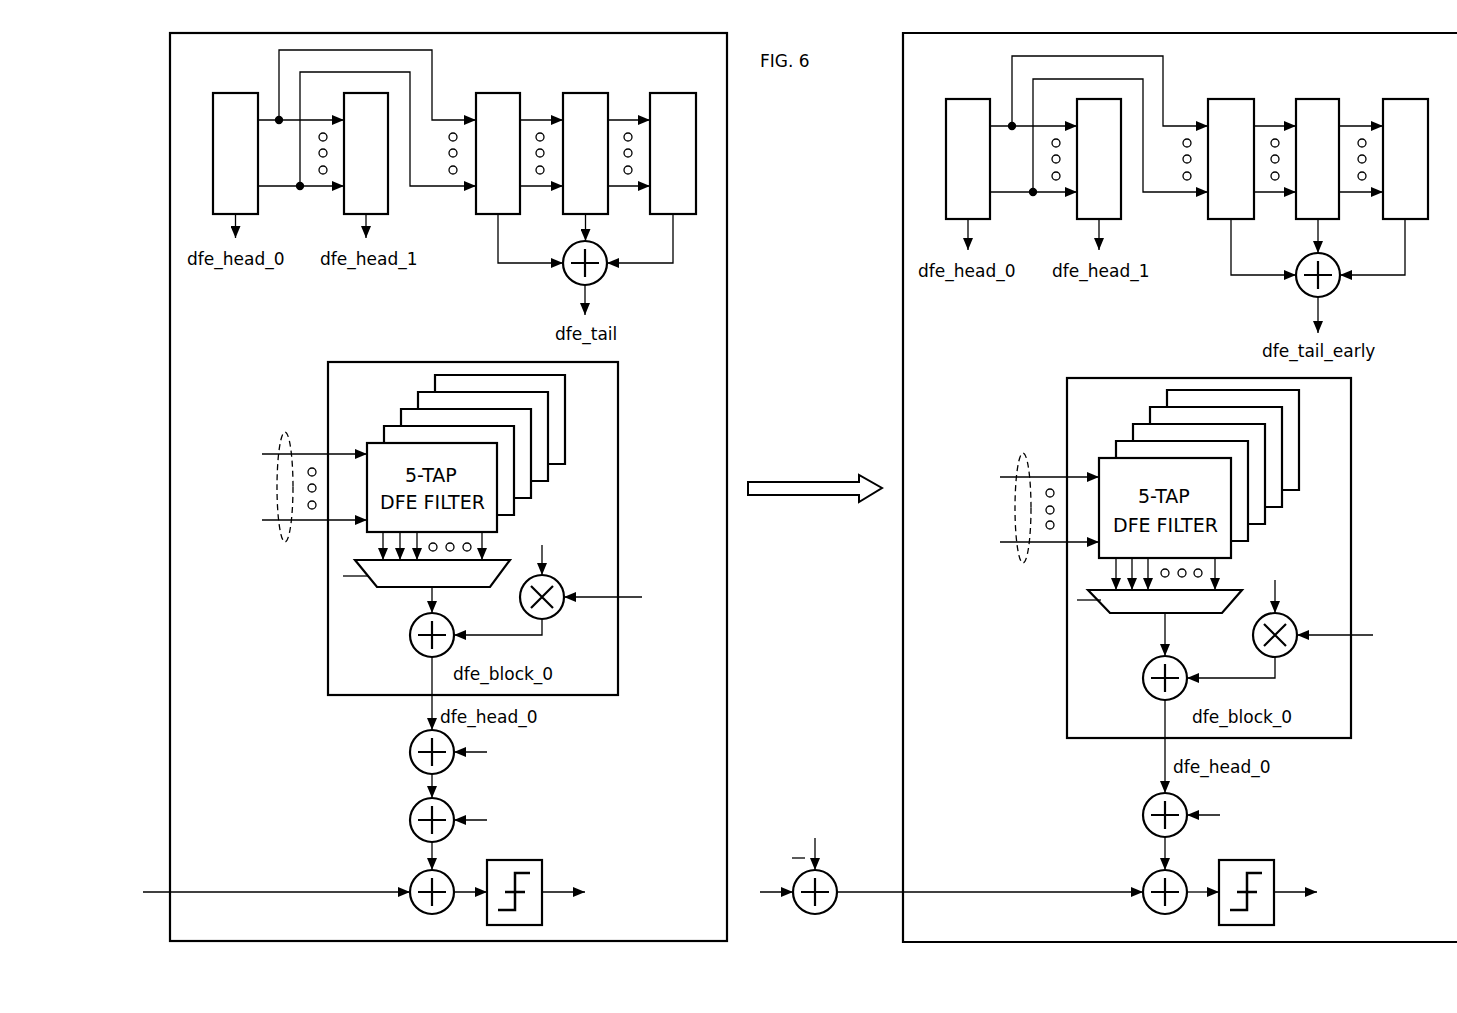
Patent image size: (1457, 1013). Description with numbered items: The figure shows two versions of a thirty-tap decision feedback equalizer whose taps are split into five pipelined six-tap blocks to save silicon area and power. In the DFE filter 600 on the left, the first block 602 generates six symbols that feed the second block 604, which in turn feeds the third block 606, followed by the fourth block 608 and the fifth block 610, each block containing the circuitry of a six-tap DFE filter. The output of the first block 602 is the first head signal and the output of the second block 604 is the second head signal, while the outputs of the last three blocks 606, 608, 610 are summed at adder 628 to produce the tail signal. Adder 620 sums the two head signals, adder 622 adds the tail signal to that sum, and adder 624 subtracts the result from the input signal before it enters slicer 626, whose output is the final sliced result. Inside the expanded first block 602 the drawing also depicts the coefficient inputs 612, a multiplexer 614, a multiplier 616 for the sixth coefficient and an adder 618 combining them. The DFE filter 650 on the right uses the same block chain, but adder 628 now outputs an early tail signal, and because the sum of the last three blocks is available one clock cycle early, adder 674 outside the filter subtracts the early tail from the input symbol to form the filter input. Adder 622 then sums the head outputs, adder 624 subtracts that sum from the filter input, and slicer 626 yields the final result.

The 30-tap DFE filter 600 is at (168, 168).
The DFE filter 650 is at (901, 168).
The dfe_block_0 602 is at (258, 199).
The dfe_block_1 604 is at (388, 199).
The dfe_block_2 606 is at (508, 93).
The dfe_block_3 608 is at (595, 93).
The dfe_block_4 610 is at (683, 93).
The coefficient inputs coeff_0..coeff_4 612 is at (285, 433).
The multiplexer 614 is at (393, 587).
The multiplier 616 is at (560, 612).
The adder 618 is at (415, 652).
The adder 620 is at (415, 738).
The adder 622 is at (415, 806).
The adder 624 is at (415, 878).
The slicer 626 is at (542, 905).
The adder 628 is at (601, 278).
The adder 674 is at (800, 911).